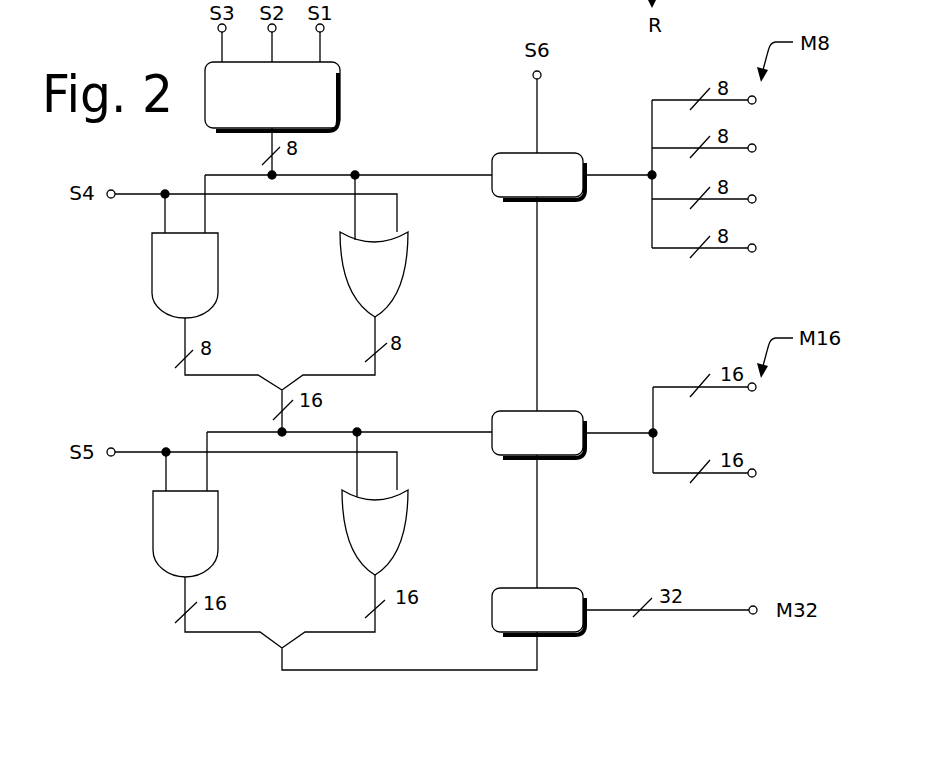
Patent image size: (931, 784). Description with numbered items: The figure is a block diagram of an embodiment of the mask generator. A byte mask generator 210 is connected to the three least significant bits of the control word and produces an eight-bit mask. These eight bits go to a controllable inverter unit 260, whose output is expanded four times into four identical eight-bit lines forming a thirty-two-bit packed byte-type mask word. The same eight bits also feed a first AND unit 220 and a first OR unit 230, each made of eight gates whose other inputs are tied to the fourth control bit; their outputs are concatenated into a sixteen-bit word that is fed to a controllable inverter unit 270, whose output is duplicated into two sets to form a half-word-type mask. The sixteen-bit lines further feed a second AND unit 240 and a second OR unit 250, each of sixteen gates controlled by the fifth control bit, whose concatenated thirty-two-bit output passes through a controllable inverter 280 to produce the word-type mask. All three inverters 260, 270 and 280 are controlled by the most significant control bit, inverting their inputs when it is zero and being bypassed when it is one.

The byte mask generator 210 is at (222, 118).
The first AND unit 220 is at (177, 293).
The first OR unit 230 is at (380, 290).
The second AND unit 240 is at (178, 550).
The second OR unit 250 is at (380, 548).
The controllable inverter unit 260 is at (555, 190).
The controllable inverter unit 270 is at (557, 447).
The controllable inverter 280 is at (547, 622).